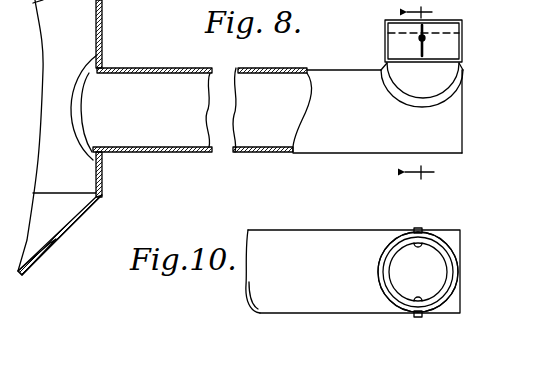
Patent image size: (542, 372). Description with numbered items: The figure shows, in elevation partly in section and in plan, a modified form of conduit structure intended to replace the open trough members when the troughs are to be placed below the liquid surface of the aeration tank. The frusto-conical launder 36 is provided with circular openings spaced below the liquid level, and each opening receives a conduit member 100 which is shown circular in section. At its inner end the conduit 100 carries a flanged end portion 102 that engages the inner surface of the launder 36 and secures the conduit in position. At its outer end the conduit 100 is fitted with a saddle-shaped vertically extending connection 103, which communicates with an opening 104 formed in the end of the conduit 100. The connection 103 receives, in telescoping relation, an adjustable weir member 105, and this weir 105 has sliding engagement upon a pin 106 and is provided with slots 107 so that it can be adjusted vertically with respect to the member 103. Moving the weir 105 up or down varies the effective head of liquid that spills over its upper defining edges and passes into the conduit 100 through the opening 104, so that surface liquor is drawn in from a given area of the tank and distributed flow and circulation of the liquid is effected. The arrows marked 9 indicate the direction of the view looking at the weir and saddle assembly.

In FIG. 8, the launder 36 is at (62, 233).
In FIG. 8, the viewing direction arrow 9 is at (427, 94).
In FIG. 8, the conduit member 100 is at (238, 71).
In FIG. 10, the conduit member 100 is at (311, 241).
In FIG. 8, the flanged end portion 102 is at (60, 137).
In FIG. 8, the saddle-shaped vertically extending connection 103 is at (440, 80).
In FIG. 10, the saddle-shaped vertically extending connection 103 is at (448, 280).
In FIG. 10, the opening 104 is at (430, 269).
In FIG. 8, the adjustable weir member 105 is at (449, 47).
In FIG. 10, the adjustable weir member 105 is at (436, 243).
In FIG. 8, the pin 106 is at (419, 38).
In FIG. 10, the pin 106 is at (417, 229).
In FIG. 8, the slot 107 is at (419, 50).